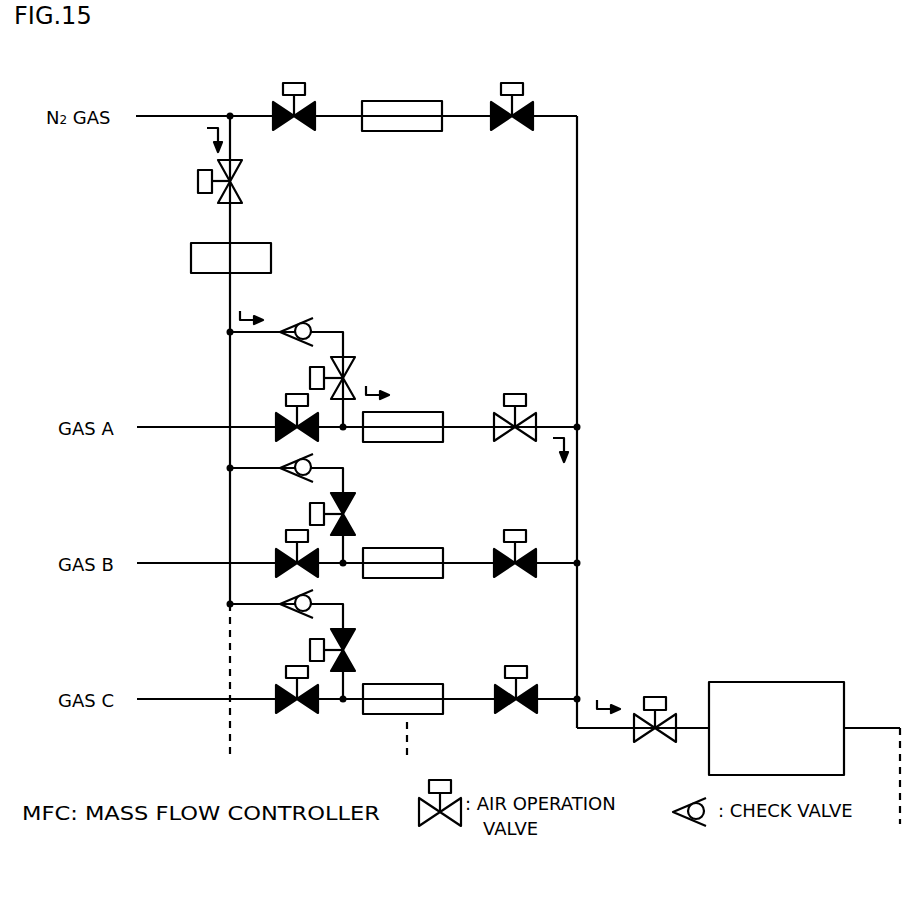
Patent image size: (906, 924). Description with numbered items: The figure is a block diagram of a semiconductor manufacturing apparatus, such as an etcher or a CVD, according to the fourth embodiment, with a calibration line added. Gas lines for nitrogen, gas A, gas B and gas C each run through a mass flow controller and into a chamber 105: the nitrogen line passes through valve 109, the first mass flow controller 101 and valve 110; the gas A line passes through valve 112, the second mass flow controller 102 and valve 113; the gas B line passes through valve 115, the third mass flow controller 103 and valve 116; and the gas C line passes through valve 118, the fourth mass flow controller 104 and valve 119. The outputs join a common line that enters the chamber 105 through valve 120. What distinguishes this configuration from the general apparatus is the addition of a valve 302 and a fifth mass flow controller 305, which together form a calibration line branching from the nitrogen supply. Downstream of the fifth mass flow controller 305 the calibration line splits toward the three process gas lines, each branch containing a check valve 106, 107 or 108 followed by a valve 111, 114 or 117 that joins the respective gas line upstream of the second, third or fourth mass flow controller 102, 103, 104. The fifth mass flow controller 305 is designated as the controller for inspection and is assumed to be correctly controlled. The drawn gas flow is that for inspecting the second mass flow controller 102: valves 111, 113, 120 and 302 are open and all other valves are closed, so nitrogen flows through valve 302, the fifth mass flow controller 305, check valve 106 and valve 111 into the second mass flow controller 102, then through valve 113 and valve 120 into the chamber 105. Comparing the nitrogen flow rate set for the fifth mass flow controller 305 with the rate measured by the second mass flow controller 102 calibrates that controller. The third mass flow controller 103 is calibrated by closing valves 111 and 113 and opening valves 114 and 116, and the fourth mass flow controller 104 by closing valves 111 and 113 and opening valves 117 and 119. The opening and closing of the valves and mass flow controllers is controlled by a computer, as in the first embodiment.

The mass flow controller MFC 1 101 is at (411, 101).
The mass flow controller MFC 2 102 is at (428, 413).
The mass flow controller MFC 3 103 is at (428, 549).
The mass flow controller MFC 4 104 is at (428, 685).
The chamber 105 is at (846, 697).
The check valve 106 is at (290, 338).
The check valve 107 is at (290, 474).
The check valve 108 is at (290, 610).
The air operation valve 109 is at (297, 83).
The air operation valve 110 is at (514, 83).
The air operation valve 111 is at (349, 358).
The air operation valve 112 is at (285, 398).
The air operation valve 113 is at (514, 394).
The air operation valve 114 is at (349, 494).
The air operation valve 115 is at (285, 534).
The air operation valve 116 is at (514, 530).
The air operation valve 117 is at (349, 630).
The air operation valve 118 is at (285, 670).
The air operation valve 119 is at (514, 666).
The air operation valve 120 is at (655, 697).
The valve 302 is at (205, 170).
The MFC 5 305 is at (272, 258).